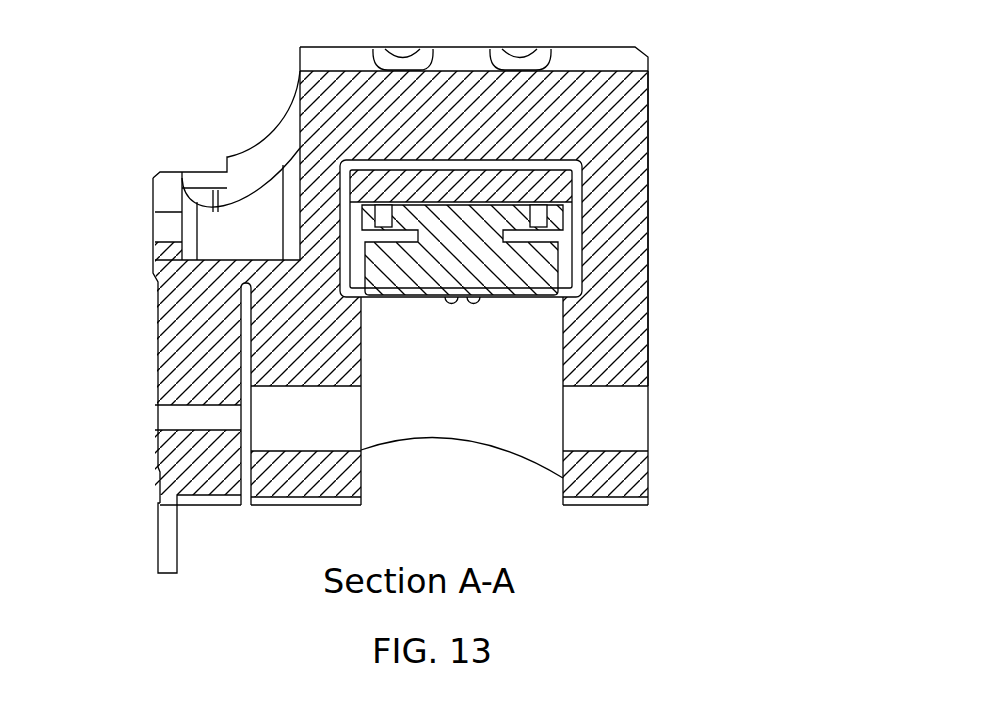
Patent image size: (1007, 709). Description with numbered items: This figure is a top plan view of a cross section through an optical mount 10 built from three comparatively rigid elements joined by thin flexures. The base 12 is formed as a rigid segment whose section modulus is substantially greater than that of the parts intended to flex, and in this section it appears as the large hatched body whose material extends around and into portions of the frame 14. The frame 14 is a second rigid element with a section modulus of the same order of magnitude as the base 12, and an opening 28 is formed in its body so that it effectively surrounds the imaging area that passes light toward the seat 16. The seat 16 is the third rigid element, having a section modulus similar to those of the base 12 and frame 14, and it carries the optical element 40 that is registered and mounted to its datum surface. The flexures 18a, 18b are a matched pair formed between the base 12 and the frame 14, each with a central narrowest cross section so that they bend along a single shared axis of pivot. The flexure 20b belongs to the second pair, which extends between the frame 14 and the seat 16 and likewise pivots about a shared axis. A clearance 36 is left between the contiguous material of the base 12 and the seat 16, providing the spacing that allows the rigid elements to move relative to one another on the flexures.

The connector assembly 10 is at (157, 48).
The base 12 is at (323, 88).
The frame 14 is at (630, 365).
The seat 16 is at (540, 183).
The flexure 18a is at (270, 303).
The flexure 18b is at (612, 260).
The flexure 20b is at (460, 308).
The opening 28 is at (462, 420).
The clearance 36 is at (580, 210).
The optical element 40 is at (395, 292).